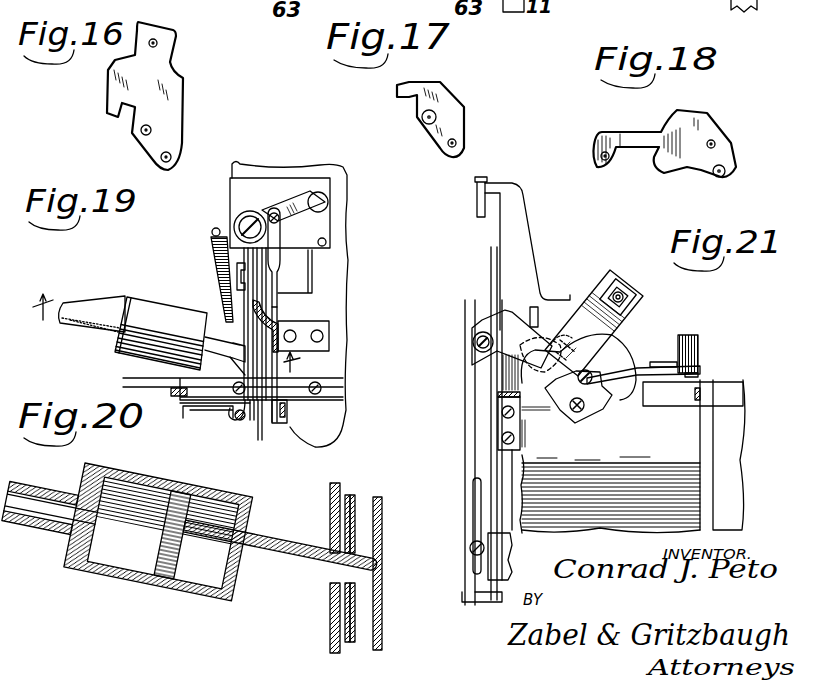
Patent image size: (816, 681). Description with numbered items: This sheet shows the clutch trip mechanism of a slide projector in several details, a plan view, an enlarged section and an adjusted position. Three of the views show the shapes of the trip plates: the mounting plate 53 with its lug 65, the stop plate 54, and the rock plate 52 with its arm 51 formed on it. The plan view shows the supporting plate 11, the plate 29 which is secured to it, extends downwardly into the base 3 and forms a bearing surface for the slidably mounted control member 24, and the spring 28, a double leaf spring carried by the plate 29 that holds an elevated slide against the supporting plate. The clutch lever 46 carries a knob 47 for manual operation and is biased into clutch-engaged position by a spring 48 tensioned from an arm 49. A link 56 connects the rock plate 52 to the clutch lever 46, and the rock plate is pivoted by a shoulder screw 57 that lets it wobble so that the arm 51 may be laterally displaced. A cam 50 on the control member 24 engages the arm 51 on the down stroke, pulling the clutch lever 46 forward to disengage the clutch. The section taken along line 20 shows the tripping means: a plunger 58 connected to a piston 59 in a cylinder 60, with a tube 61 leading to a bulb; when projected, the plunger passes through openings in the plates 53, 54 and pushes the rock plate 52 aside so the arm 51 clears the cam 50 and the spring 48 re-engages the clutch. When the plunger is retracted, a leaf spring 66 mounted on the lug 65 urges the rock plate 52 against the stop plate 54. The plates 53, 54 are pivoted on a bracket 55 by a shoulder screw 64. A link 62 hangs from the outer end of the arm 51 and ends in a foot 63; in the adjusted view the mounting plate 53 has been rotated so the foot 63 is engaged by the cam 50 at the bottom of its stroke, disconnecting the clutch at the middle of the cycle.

In FIG. 19, the base 3 is at (340, 331).
In FIG. 21, the base 3 is at (700, 450).
In FIG. 19, the supporting plate 11 is at (123, 378).
In FIG. 19, the section line 20— 20 is at (177, 337).
In FIG. 19, the control member 24 is at (222, 409).
In FIG. 21, the control member 24 is at (491, 267).
In FIG. 19, the spring 28 is at (171, 390).
In FIG. 19, the plate 29 is at (222, 409).
In FIG. 19, the clutch lever 46 is at (298, 200).
In FIG. 21, the clutch lever 46 is at (665, 385).
In FIG. 19, the knob 47 is at (330, 203).
In FIG. 21, the knob 47 is at (700, 340).
In FIG. 19, the spring 48 is at (213, 258).
In FIG. 19, the arm 49 is at (214, 228).
In FIG. 19, the cam 50 is at (242, 418).
In FIG. 18, the arm 51 is at (618, 137).
In FIG. 19, the arm 51 is at (262, 432).
In FIG. 21, the arm 51 is at (512, 317).
In FIG. 18, the rock plate 52 is at (711, 127).
In FIG. 20, the rock plate 52 is at (383, 527).
In FIG. 16, the mounting plate 53 is at (172, 118).
In FIG. 20, the mounting plate 53 is at (345, 502).
In FIG. 21, the mounting plate 53 is at (612, 344).
In FIG. 17, the stop plate 54 is at (464, 107).
In FIG. 20, the stop plate 54 is at (355, 498).
In FIG. 19, the bracket 55 is at (240, 420).
In FIG. 20, the bracket 55 is at (330, 498).
In FIG. 21, the bracket 55 is at (517, 217).
In FIG. 19, the link 56 is at (282, 260).
In FIG. 21, the link 56 is at (640, 398).
In FIG. 21, the shoulder screw 57 is at (580, 412).
In FIG. 20, the plunger 58 is at (360, 568).
In FIG. 21, the plunger 58 is at (483, 362).
In FIG. 20, the piston 59 is at (160, 565).
In FIG. 19, the cylinder 60 is at (173, 313).
In FIG. 20, the cylinder 60 is at (197, 597).
In FIG. 21, the cylinder 60 is at (540, 327).
In FIG. 19, the tube 61 is at (108, 288).
In FIG. 20, the tube 61 is at (43, 533).
In FIG. 19, the link 62 is at (287, 412).
In FIG. 21, the link 62 is at (478, 378).
In FIG. 21, the foot 63 is at (490, 602).
In FIG. 21, the shoulder screw 64 is at (552, 410).
In FIG. 16, the lug 65 is at (158, 43).
In FIG. 21, the lug 65 is at (608, 274).
In FIG. 19, the leaf spring 66 is at (278, 318).
In FIG. 21, the leaf spring 66 is at (623, 328).